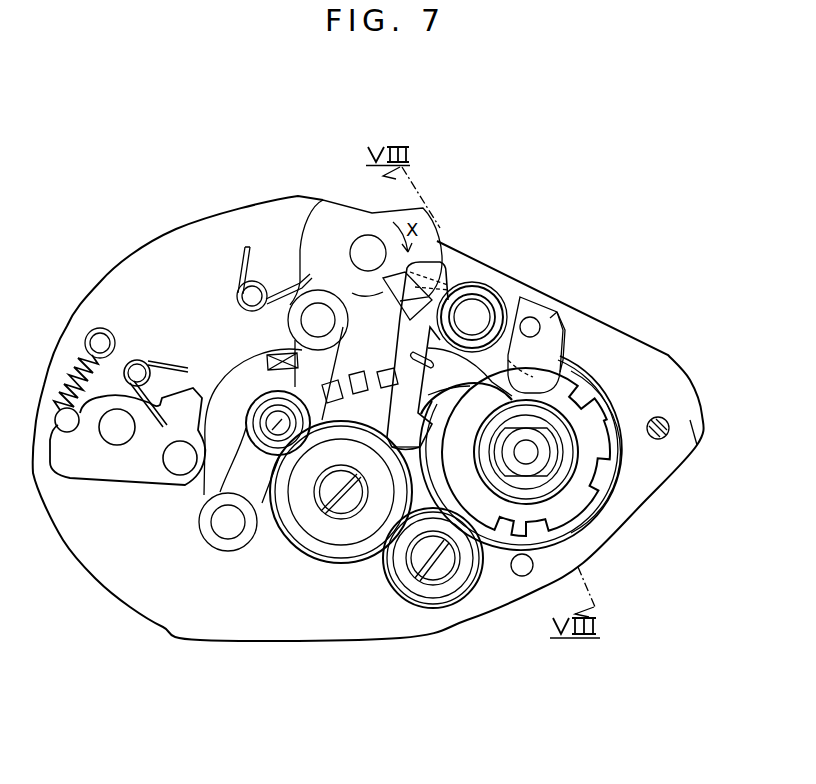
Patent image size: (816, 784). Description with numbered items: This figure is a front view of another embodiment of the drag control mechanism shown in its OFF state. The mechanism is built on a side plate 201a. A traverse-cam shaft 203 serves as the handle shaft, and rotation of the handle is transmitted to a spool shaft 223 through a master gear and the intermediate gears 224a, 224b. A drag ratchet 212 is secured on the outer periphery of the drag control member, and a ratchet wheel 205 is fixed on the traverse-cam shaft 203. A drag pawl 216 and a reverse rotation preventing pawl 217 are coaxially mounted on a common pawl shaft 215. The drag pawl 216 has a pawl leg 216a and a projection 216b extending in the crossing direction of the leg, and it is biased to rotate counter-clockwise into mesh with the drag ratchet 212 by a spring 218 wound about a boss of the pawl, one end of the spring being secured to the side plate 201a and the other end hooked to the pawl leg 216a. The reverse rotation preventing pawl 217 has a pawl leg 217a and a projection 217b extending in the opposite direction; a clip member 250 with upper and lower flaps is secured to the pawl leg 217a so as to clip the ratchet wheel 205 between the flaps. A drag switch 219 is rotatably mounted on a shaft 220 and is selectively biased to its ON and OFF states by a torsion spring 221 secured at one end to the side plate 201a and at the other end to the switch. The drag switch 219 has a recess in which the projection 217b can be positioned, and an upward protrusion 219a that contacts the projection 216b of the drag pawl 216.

The side plate 201a is at (138, 272).
The traverse-cam shaft 203 is at (624, 492).
The ratchet wheel 205 is at (570, 382).
The drag ratchet 212 is at (620, 508).
The pawl shaft 215 is at (472, 315).
The drag pawl 216 is at (445, 417).
The pawl leg 216a is at (403, 408).
The projection 216b is at (462, 230).
The reverse rotation preventing pawl 217 is at (588, 325).
The pawl leg 217a is at (563, 347).
The projection 217b is at (418, 334).
The spring 218 is at (541, 462).
The drag switch 219 is at (344, 248).
The upward protrusion 219a is at (392, 300).
The shaft 220 is at (362, 247).
The torsion spring 221 is at (238, 275).
The spool shaft 223 is at (300, 432).
The intermediate gear 224a is at (452, 610).
The intermediate gear 224b is at (290, 547).
The clip member 250 is at (555, 313).